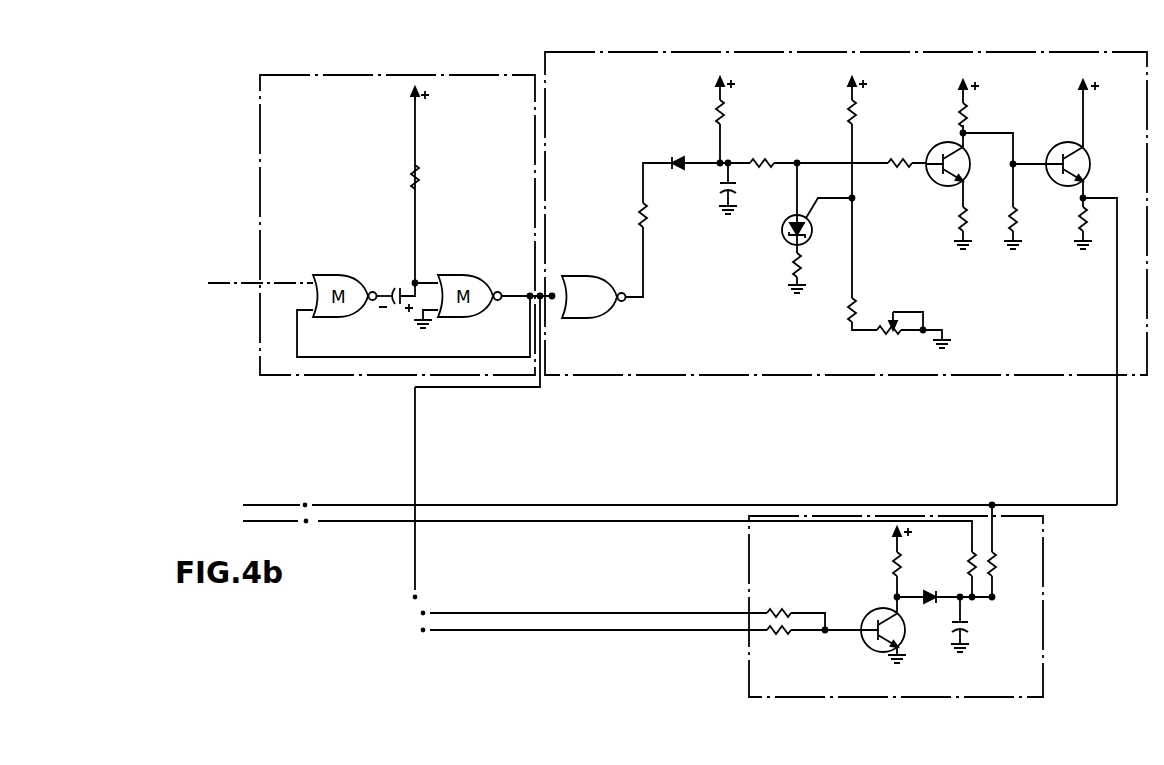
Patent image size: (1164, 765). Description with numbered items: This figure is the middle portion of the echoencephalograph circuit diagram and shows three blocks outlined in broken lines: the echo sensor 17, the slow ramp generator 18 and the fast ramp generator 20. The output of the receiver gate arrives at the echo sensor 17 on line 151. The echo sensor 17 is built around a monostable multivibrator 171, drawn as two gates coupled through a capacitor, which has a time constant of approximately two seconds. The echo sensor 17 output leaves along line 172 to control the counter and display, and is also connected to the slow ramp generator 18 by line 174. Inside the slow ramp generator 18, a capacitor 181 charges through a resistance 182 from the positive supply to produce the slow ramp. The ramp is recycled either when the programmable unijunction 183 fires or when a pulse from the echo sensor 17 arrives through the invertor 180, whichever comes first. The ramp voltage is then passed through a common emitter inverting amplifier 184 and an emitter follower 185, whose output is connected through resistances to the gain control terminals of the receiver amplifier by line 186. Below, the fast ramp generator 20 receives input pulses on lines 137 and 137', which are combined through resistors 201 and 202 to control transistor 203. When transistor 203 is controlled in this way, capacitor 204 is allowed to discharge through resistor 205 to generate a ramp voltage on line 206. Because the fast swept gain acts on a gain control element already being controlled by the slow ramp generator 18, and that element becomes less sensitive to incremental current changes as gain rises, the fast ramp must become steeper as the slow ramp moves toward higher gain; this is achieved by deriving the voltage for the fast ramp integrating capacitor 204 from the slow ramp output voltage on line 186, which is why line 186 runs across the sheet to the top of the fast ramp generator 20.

The echo sensor 17 is at (390, 50).
The slow ramp generator 18 is at (545, 65).
The fast ramp generator 20 is at (1047, 625).
The line 151 is at (243, 280).
The monostable multivibrator 171 is at (378, 266).
The line 174 is at (549, 282).
The line 172 is at (417, 576).
The invertor 180 is at (597, 277).
The capacitor 181 is at (718, 194).
The resistance 182 is at (718, 118).
The programmable unijunction 183 is at (790, 242).
The common emitter inverting amplifier 184 is at (920, 140).
The emitter follower 185 is at (1041, 140).
The line 186 is at (370, 505).
The line 206 is at (365, 521).
The line 137 is at (595, 605).
The line 137' is at (595, 596).
The resistor 201 is at (778, 612).
The resistor 202 is at (780, 633).
The transistor 203 is at (868, 650).
The capacitor 204 is at (972, 628).
The resistor 205 is at (992, 565).